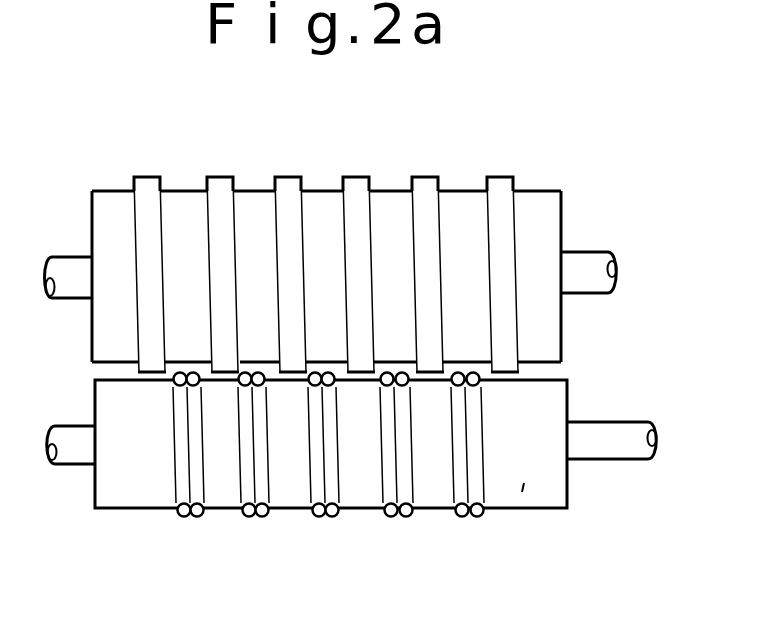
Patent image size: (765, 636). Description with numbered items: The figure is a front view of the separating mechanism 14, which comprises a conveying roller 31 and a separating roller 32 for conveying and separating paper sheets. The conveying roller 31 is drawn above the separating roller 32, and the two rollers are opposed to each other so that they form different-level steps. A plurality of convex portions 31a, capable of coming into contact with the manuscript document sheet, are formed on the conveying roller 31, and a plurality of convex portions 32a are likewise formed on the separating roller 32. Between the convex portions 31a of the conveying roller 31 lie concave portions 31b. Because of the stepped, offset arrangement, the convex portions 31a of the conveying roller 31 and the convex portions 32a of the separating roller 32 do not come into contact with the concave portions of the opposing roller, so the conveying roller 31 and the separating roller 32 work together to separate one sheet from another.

The separating mechanism 14 is at (627, 372).
The conveying roller 31 is at (546, 216).
The convex portions 31a is at (516, 155).
The concave portions 31b is at (388, 175).
The separating roller 32 is at (528, 518).
The convex portions 32a is at (390, 529).